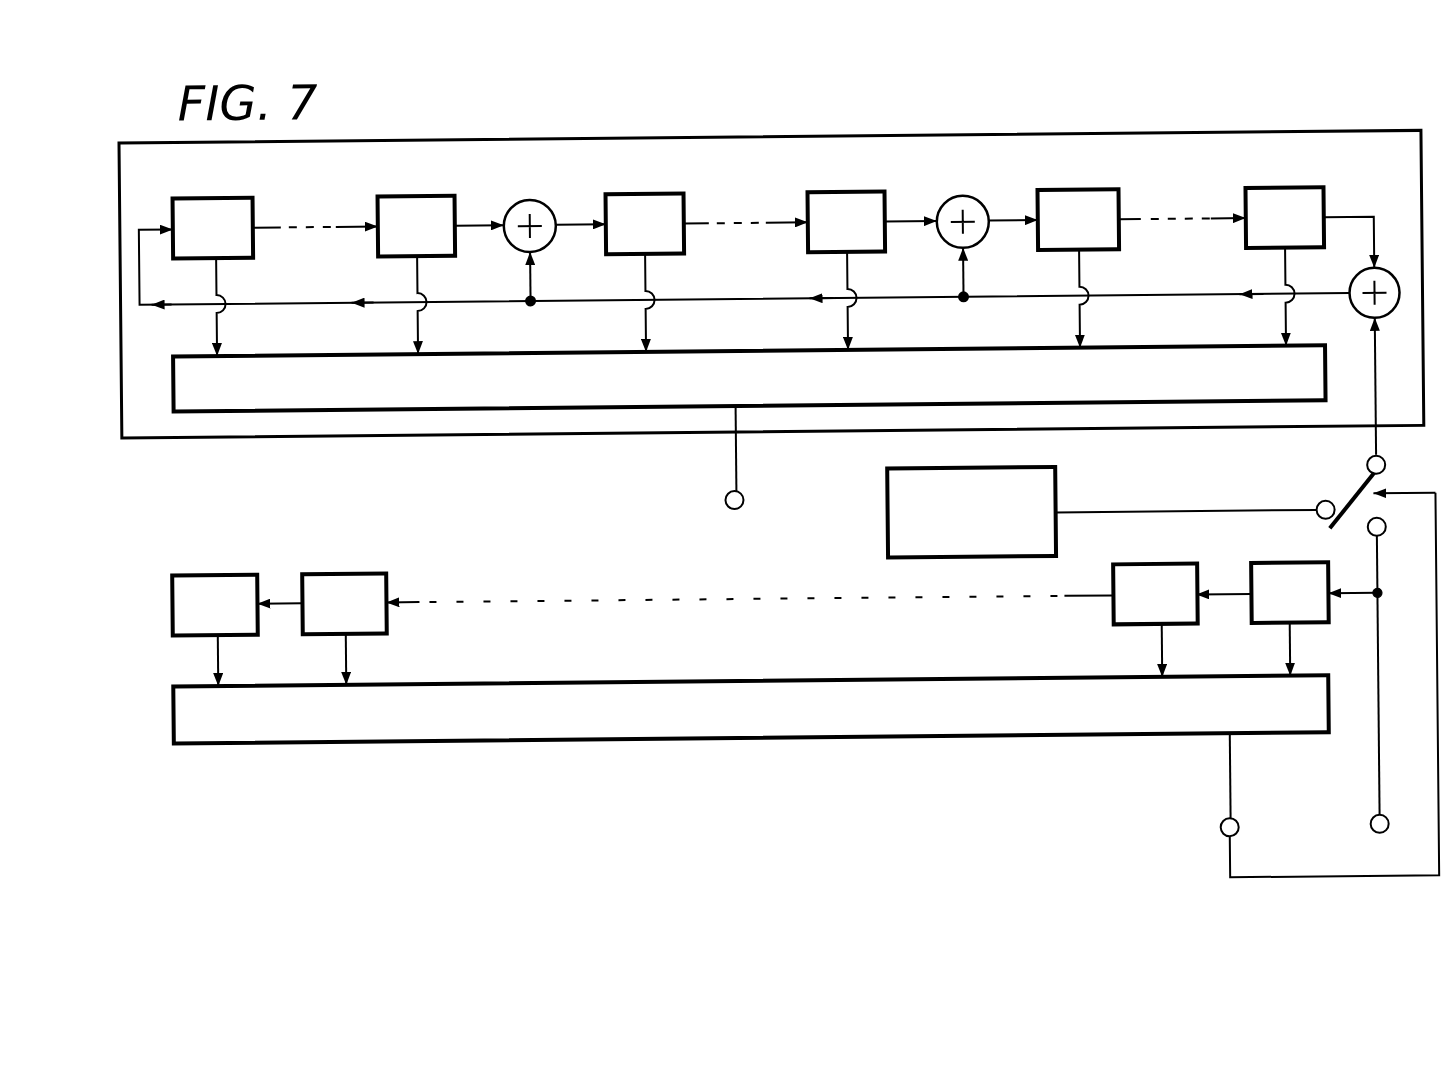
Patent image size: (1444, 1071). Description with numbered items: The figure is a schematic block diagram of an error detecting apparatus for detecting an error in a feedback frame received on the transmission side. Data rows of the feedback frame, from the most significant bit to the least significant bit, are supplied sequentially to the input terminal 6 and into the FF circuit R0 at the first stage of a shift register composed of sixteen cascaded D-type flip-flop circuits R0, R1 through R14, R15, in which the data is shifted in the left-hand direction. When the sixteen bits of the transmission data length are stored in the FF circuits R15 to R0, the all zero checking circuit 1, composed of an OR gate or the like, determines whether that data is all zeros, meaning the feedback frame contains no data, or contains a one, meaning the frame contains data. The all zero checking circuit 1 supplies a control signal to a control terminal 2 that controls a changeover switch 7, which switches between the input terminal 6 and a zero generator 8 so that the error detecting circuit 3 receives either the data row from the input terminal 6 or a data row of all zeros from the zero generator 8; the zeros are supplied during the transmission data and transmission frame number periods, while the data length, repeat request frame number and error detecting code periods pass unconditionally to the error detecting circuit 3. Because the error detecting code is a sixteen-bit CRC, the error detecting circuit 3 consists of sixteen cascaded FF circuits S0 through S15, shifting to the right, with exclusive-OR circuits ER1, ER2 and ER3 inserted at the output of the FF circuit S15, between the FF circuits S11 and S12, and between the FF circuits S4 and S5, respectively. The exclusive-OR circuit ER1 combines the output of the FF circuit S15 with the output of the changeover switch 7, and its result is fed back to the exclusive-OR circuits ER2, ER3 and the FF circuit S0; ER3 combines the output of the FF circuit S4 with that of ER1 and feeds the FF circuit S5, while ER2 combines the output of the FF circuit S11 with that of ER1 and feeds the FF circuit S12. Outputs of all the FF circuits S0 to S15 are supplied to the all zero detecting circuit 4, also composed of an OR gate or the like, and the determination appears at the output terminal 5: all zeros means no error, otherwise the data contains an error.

The all zero checking circuit 1 is at (689, 748).
The control terminal 2 is at (1214, 839).
The error detecting circuit 3 is at (390, 440).
The all zero detecting circuit 4 is at (734, 358).
The output terminal 5 is at (722, 507).
The input terminal 6 is at (1364, 836).
The changeover switch 7 is at (1349, 504).
The zero generator 8 is at (884, 506).
The FF circuit S0 is at (186, 199).
The FF circuit S4 is at (392, 199).
The FF circuit S5 is at (641, 199).
The FF circuit S11 is at (841, 199).
The FF circuit S12 is at (1071, 199).
The FF circuit S15 is at (1283, 199).
The exclusive-OR circuit ER1 is at (1382, 283).
The exclusive-OR circuit ER2 is at (962, 204).
The exclusive-OR circuit ER3 is at (529, 204).
The FF circuit R15 is at (213, 576).
The FF circuit R14 is at (345, 576).
The FF circuit R1 is at (1112, 636).
The FF circuit R0 is at (1252, 636).